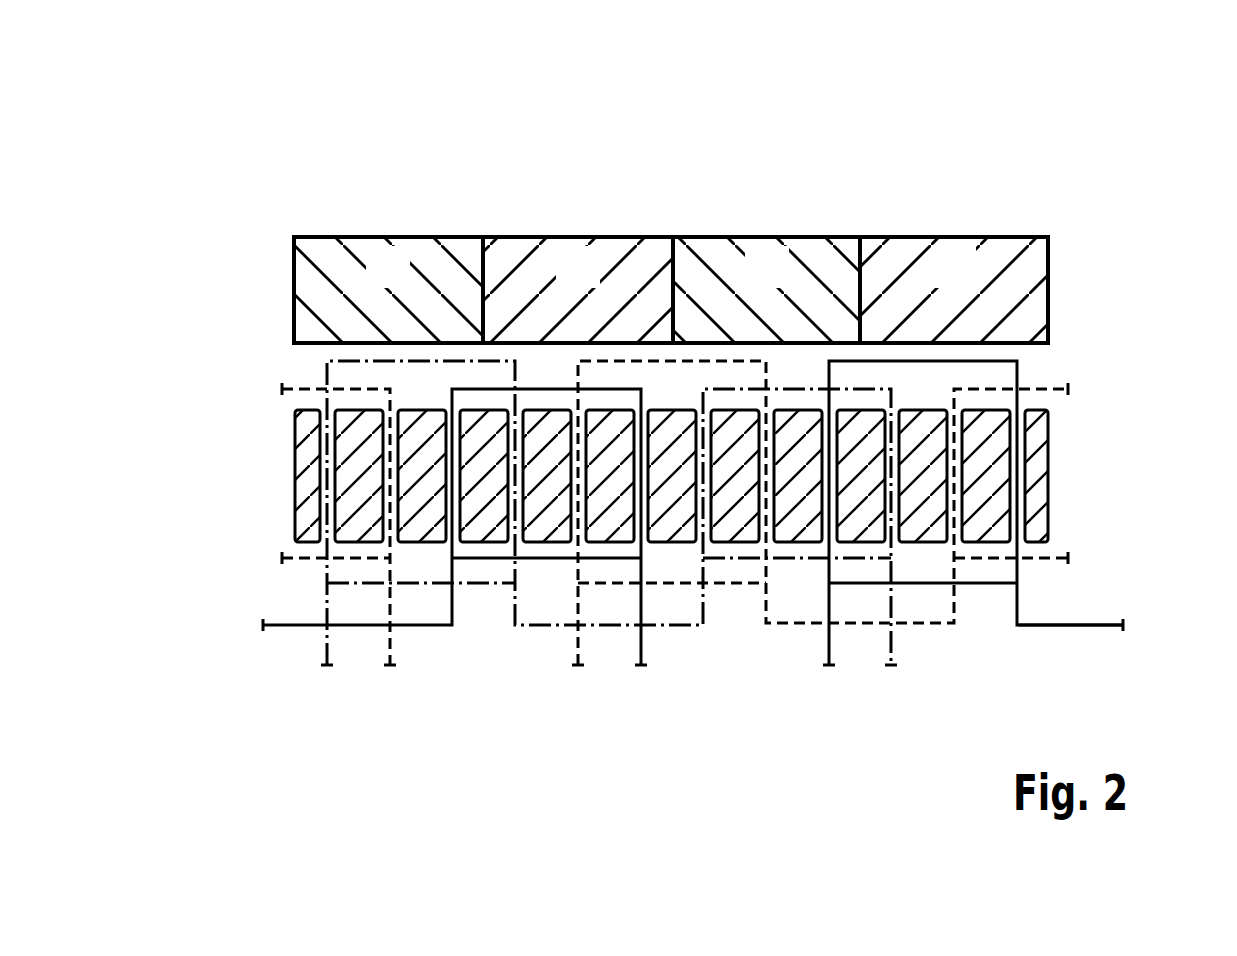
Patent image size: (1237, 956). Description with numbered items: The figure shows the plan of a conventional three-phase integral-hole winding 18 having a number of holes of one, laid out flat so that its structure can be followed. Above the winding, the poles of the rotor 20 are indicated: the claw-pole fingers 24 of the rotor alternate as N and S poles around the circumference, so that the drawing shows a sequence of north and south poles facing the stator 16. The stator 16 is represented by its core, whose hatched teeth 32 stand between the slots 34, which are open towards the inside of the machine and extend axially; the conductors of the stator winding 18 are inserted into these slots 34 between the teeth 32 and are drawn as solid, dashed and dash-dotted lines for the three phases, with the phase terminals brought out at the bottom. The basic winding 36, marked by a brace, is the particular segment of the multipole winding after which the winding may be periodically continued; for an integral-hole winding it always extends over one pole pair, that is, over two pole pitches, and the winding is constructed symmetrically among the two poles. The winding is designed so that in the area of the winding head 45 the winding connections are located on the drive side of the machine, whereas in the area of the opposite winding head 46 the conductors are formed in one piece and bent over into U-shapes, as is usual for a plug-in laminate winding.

The stator 16 is at (636, 476).
The stator winding 18 is at (680, 525).
The rotor 20 is at (671, 216).
The claw-pole fingers 24 is at (652, 231).
The stator teeth 32 is at (990, 426).
The slot 34 is at (1020, 490).
The basic winding 36 is at (673, 728).
The winding head 45 is at (1058, 592).
The opposite winding head 46 is at (1058, 377).